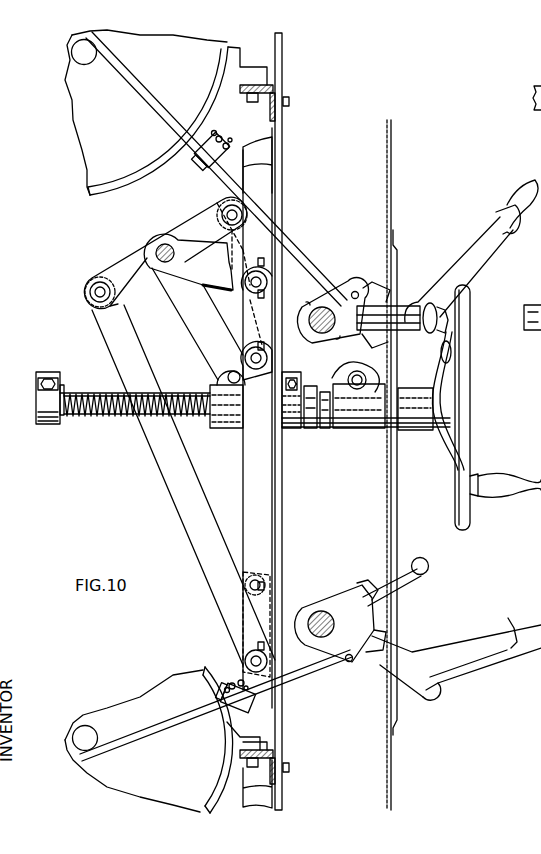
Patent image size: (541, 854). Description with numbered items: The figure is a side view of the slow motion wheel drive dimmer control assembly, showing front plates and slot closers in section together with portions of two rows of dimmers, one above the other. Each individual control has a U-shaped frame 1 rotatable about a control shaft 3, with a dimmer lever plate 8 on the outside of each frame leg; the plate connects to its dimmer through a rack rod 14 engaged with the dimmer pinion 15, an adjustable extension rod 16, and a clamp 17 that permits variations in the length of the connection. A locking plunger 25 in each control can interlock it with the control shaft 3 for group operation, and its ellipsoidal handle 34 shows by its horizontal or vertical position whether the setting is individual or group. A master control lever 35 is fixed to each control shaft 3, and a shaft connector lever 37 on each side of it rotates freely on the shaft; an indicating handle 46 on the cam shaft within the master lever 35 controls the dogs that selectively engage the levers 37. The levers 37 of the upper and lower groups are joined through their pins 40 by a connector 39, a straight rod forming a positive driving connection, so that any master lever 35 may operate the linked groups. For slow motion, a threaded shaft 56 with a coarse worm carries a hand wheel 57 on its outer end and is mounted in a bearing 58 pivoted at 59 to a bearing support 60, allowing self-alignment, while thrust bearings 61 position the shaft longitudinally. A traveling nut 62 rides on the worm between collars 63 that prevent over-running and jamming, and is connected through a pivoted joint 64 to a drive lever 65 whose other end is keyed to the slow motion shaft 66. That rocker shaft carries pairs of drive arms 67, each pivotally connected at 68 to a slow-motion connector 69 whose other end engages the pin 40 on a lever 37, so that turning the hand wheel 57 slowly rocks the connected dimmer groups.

The frame 1 is at (353, 600).
The control shaft 3 is at (323, 306).
The dimmer lever plate 8 is at (340, 298).
The rack rod 14 is at (143, 75).
The dimmer pinion 15 is at (85, 65).
The adjustable extension rod 16 is at (302, 245).
The clamp 17 is at (206, 160).
The locking plunger 25 is at (407, 316).
The handle 34 is at (428, 340).
The master control lever 35 is at (460, 258).
The shaft connector lever 37 is at (290, 594).
The connector 39 is at (257, 540).
The pin 40 is at (245, 660).
The indicating handle 46 is at (442, 694).
The threaded shaft 56 is at (105, 418).
The hand wheel 57 is at (487, 437).
The bearing 58 is at (371, 430).
The pivot 59 is at (357, 392).
The bearing support 60 is at (303, 398).
The thrust bearings 61 is at (377, 427).
The traveling nut 62 is at (208, 393).
The collars 63 is at (46, 430).
The pivoted joint 64 is at (228, 378).
The drive lever 65 is at (205, 333).
The slow motion shaft 66 is at (148, 252).
The drive arms 67 is at (210, 215).
The pivotal connection 68 is at (220, 210).
The slow-motion connector 69 is at (192, 508).